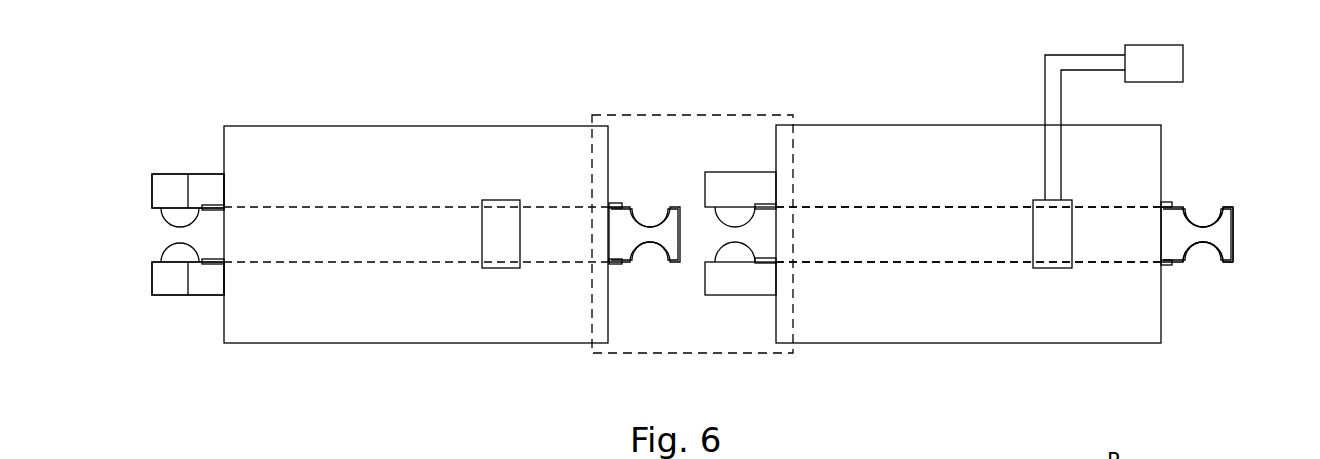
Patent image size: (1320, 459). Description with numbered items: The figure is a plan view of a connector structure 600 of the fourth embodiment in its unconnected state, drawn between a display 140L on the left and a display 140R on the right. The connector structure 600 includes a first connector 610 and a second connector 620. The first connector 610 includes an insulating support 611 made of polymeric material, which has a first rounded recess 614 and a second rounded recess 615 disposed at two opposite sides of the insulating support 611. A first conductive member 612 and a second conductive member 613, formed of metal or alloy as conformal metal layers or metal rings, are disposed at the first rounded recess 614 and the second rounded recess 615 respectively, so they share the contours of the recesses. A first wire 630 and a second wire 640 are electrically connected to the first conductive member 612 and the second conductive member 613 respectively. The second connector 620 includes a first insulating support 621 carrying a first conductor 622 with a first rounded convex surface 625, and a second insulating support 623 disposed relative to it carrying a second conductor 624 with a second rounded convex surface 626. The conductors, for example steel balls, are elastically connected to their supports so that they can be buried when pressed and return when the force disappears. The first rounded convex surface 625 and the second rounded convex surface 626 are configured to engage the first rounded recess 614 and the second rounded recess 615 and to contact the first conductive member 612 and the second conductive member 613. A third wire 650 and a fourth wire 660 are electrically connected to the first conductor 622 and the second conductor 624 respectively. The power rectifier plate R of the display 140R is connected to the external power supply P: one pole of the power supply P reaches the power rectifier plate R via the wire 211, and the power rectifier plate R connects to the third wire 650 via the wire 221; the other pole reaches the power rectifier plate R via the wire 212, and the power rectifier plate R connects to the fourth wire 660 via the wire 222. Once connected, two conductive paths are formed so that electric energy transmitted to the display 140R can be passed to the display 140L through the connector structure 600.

The connector structure 600 is at (713, 115).
The display 140L is at (410, 157).
The display 140R is at (872, 157).
The first connector 610 is at (650, 168).
The insulating support 611 is at (1225, 232).
The first conductive member 612 is at (1235, 207).
The second conductive member 613 is at (1235, 264).
The first rounded recess 614 is at (1193, 220).
The second rounded recess 615 is at (1190, 250).
The second connector 620 is at (134, 148).
The first insulating support 621 is at (175, 190).
The first conductor 622 is at (172, 213).
The second insulating support 623 is at (173, 278).
The second conductor 624 is at (173, 256).
The first rounded convex surface 625 is at (190, 228).
The second rounded convex surface 626 is at (188, 262).
The first wire 630 is at (612, 203).
The second wire 640 is at (613, 265).
The third wire 650 is at (217, 207).
The fourth wire 660 is at (218, 296).
The power rectifier plate R is at (500, 200).
The power supply P is at (1153, 45).
The wire 211 is at (1045, 93).
The wire 212 is at (1061, 100).
The wire 221 is at (845, 207).
The wire 222 is at (840, 262).